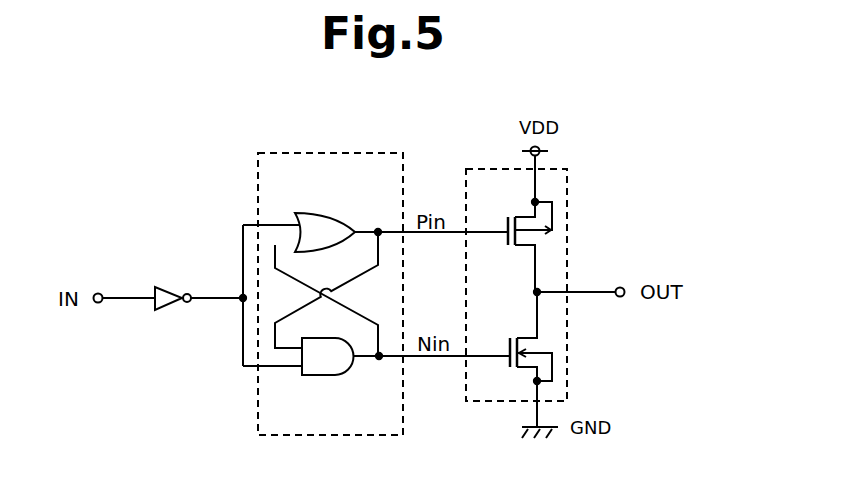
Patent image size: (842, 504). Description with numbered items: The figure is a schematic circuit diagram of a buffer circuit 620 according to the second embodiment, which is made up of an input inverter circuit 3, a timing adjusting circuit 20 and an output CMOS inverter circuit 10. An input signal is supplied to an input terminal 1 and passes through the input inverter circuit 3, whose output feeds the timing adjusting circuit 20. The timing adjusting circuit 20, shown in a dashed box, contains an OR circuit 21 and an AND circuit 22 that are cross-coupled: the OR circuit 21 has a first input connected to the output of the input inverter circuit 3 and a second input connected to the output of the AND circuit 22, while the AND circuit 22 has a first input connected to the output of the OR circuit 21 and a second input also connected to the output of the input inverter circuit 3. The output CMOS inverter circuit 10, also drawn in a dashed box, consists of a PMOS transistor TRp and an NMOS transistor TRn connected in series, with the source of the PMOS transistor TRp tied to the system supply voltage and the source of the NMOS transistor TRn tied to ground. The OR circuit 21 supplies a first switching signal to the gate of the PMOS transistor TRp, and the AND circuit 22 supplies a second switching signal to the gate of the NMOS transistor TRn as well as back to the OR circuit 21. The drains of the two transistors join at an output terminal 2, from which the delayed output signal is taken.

The input terminal 1 is at (100, 292).
The output terminal 2 is at (620, 286).
The input inverter circuit 3 is at (172, 287).
The output CMOS inverter circuit 10 is at (567, 169).
The timing adjusting circuit 20 is at (373, 153).
The OR circuit 21 is at (341, 213).
The AND circuit 22 is at (348, 376).
The buffer circuit 620 is at (670, 127).
The PMOS transistor TRp is at (506, 226).
The NMOS transistor TRn is at (508, 345).